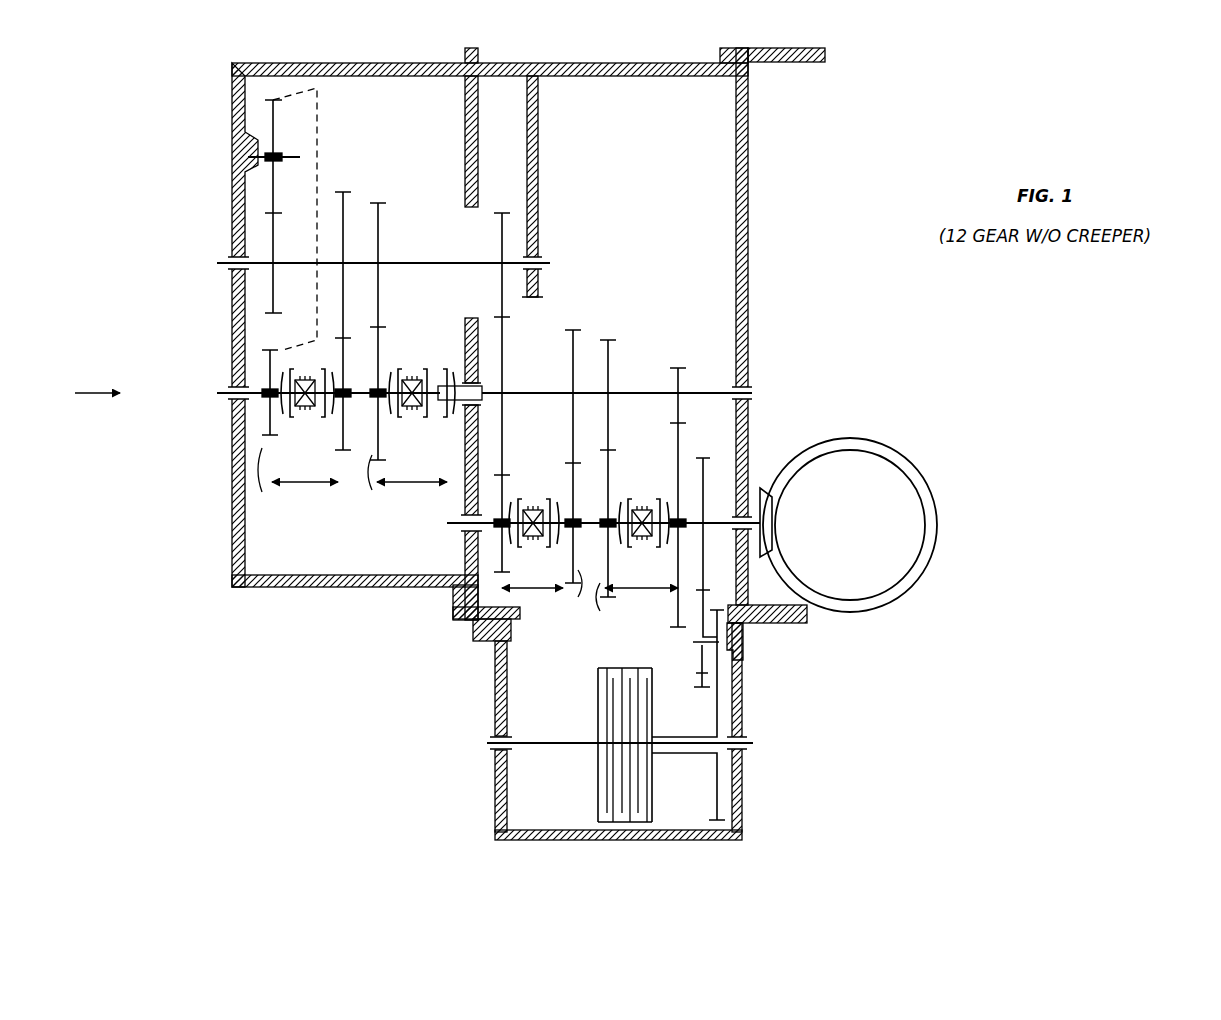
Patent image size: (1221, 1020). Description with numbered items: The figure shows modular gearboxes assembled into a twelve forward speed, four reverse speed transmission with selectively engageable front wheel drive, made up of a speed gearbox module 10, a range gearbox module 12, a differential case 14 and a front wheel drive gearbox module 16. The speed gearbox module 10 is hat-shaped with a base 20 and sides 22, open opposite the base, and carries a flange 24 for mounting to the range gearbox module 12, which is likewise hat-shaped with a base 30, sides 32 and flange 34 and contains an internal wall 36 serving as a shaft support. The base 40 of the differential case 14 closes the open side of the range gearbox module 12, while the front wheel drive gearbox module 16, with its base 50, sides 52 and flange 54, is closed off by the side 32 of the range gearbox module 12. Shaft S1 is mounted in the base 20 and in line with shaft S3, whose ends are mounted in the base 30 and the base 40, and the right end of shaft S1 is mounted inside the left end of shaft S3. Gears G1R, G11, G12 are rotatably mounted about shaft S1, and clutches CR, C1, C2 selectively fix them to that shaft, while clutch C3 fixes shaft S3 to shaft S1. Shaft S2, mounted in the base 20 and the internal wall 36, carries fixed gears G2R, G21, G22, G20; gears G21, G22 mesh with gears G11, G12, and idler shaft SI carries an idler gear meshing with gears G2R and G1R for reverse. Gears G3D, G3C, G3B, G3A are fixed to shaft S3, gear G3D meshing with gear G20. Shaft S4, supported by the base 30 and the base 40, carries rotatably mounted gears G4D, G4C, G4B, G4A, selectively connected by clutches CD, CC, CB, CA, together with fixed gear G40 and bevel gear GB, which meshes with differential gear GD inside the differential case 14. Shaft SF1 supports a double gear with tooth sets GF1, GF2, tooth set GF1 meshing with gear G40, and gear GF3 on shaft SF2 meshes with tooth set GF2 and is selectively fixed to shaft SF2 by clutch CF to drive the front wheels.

The speed gearbox module 10 is at (225, 606).
The range gearbox module 12 is at (603, 57).
The differential case 14 is at (832, 84).
The front wheel drive gearbox module 16 is at (470, 826).
The base 20 is at (232, 500).
The sides 22 is at (337, 63).
The flange 24 is at (463, 55).
The base 30 is at (466, 133).
The sides 32 is at (680, 78).
The flange 34 is at (718, 55).
The internal wall 36 is at (540, 165).
The base 40 is at (752, 165).
The base 50 is at (560, 830).
The sides 52 is at (495, 775).
The flange 54 is at (494, 655).
The shaft S1 is at (228, 390).
The shaft S2 is at (230, 270).
The shaft S3 is at (752, 390).
The shaft S4 is at (740, 518).
The idler shaft SI is at (292, 157).
The shaft SF1 is at (743, 657).
The shaft SF2 is at (755, 745).
The gear G1R is at (271, 185).
The gear G2R is at (271, 233).
The gear G11 is at (343, 452).
The gear G12 is at (401, 419).
The gear G21 is at (344, 192).
The gear G22 is at (378, 218).
The gear G20 is at (500, 243).
The gear G3A is at (680, 372).
The gear G3B is at (608, 352).
The gear G3C is at (573, 330).
The gear G3D is at (502, 345).
The gear G4A is at (678, 612).
The gear G4B is at (608, 600).
The gear G4C is at (572, 586).
The gear G4D is at (500, 560).
The gear G40 is at (716, 455).
The bevel gear GB is at (773, 522).
The differential gear GD is at (906, 465).
The gear tooth set GF1 is at (698, 688).
The gear tooth set GF2 is at (722, 675).
The gear GF3 is at (717, 805).
The clutch CF is at (597, 712).
The clutch CR is at (275, 430).
The clutch C1 is at (316, 372).
The clutch C2 is at (410, 374).
The clutch C3 is at (441, 367).
The clutch CA is at (663, 500).
The clutch CB is at (637, 496).
The clutch CC is at (549, 472).
The clutch CD is at (526, 496).